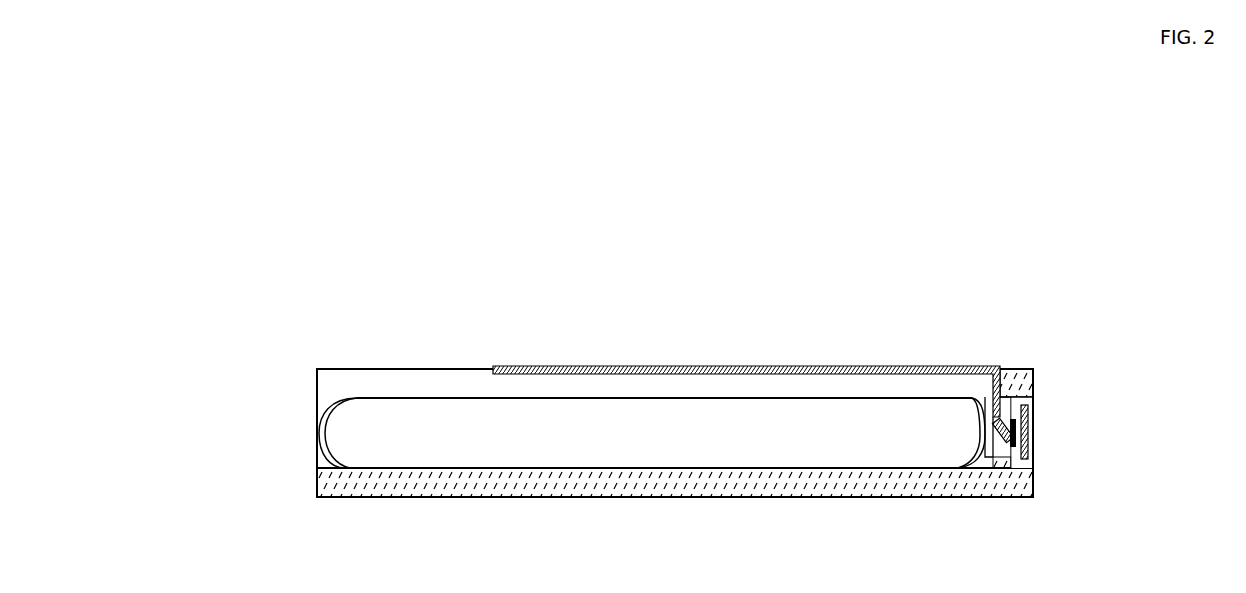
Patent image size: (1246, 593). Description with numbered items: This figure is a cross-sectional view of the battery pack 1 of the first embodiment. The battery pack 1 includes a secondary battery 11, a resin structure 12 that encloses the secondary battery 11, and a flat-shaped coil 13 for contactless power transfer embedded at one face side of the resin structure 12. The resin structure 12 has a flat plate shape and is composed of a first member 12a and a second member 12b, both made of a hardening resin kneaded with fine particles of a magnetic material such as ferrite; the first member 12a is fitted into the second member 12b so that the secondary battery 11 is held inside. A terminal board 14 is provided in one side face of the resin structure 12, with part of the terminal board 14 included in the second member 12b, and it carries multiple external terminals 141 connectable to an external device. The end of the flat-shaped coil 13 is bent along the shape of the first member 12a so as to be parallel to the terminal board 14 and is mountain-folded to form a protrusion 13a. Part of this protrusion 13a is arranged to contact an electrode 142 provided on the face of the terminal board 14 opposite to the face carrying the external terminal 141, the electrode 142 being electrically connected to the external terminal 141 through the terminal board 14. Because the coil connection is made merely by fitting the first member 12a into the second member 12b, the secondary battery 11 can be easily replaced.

The battery pack 1 is at (815, 243).
The secondary battery 11 is at (703, 460).
The resin structure 12 is at (632, 414).
The first member 12a is at (985, 397).
The second member 12b is at (1033, 372).
The flat-shaped coil 13 is at (673, 365).
The protrusion 13a is at (1006, 442).
The terminal board 14 is at (1033, 400).
The external terminal 141 is at (1033, 430).
The electrode 142 is at (1033, 447).